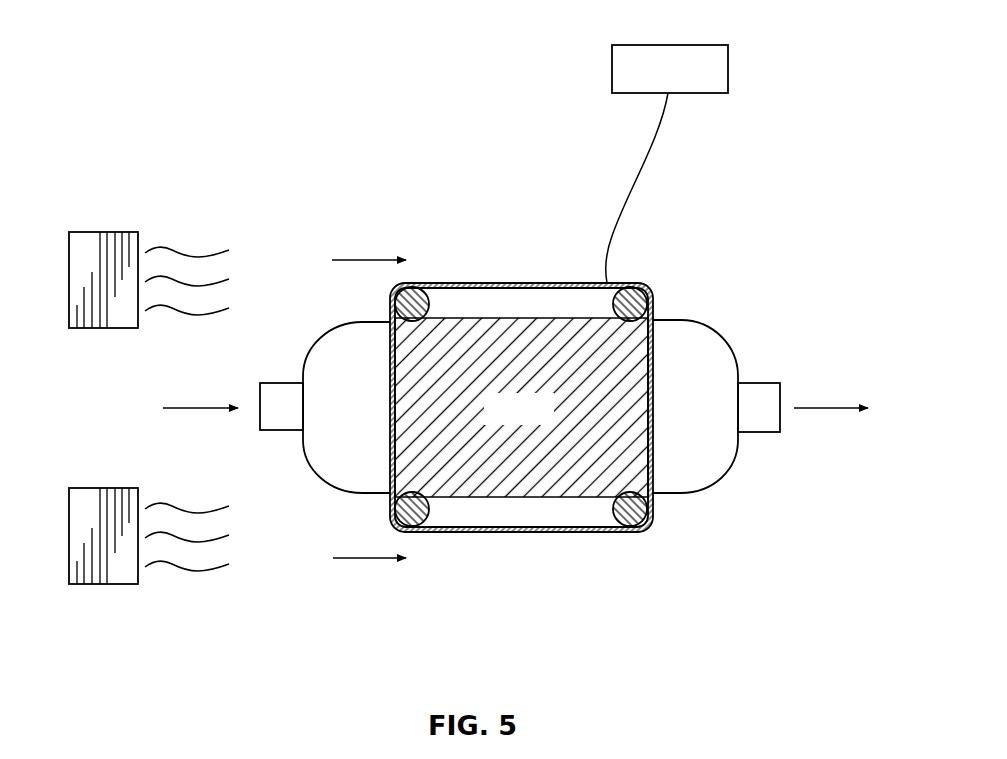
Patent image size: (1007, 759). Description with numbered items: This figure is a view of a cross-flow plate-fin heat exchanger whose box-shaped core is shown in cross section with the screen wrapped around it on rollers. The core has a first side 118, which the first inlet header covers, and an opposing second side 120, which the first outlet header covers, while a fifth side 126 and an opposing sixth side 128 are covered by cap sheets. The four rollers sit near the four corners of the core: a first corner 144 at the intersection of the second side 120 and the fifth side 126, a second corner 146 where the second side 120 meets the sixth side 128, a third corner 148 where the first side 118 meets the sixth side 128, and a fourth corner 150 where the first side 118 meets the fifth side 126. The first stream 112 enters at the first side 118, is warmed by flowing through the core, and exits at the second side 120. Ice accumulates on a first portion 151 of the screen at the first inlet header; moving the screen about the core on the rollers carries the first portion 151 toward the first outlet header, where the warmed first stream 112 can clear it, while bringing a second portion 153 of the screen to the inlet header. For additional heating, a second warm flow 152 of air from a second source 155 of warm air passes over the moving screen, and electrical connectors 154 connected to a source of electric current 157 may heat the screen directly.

The first stream 112 is at (186, 407).
The first side 118 is at (392, 508).
The second side 120 is at (656, 302).
The fifth side 126 is at (545, 283).
The sixth side 128 is at (535, 532).
The first corner 144 is at (628, 290).
The second corner 146 is at (612, 532).
The third corner 148 is at (417, 527).
The fourth corner 150 is at (393, 284).
The first portion of the screen 151 is at (390, 428).
The second warm flow 152 is at (212, 251).
The second portion of the screen 153 is at (653, 425).
The electrical connectors 154 is at (662, 135).
The second source of warm air 155 is at (91, 232).
The source of electric current 157 is at (642, 45).